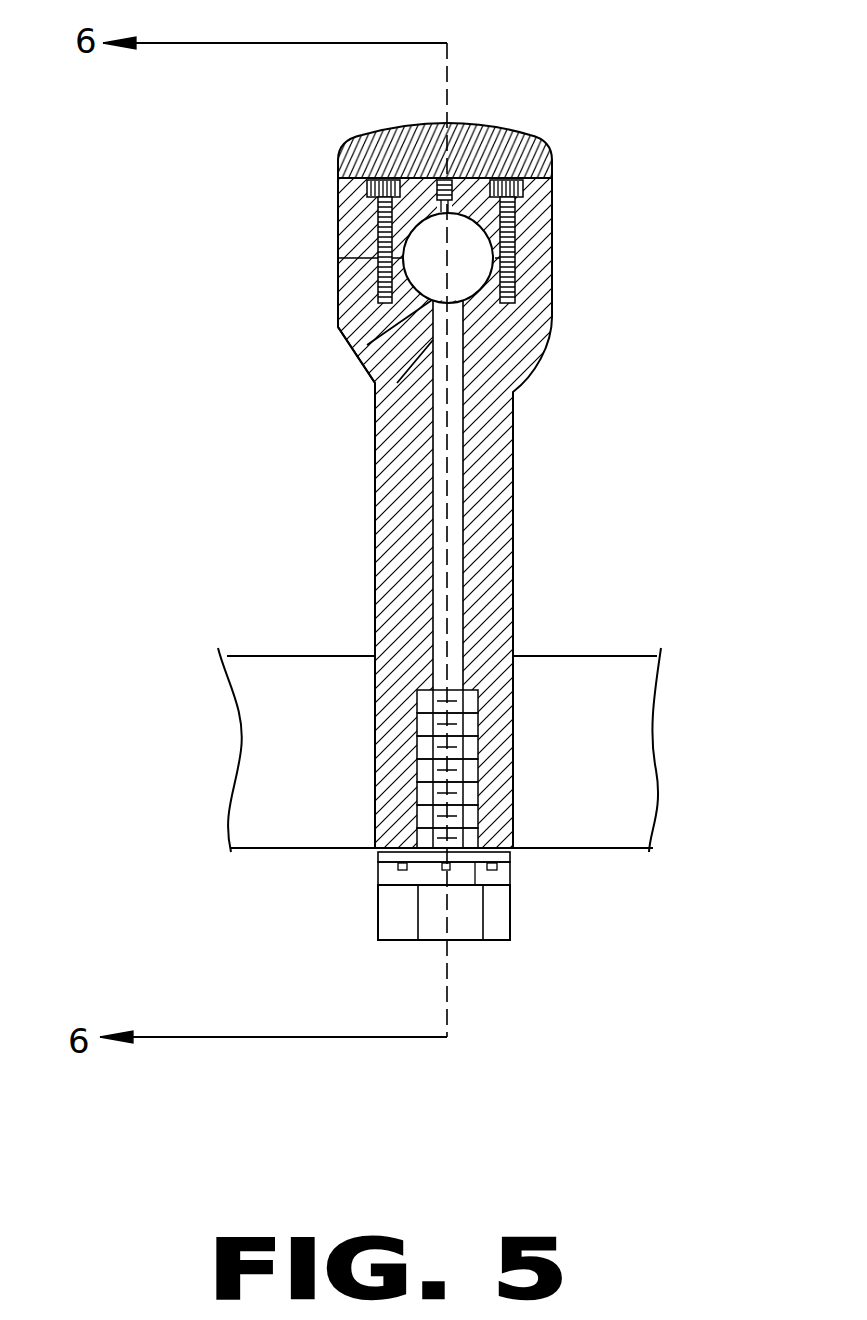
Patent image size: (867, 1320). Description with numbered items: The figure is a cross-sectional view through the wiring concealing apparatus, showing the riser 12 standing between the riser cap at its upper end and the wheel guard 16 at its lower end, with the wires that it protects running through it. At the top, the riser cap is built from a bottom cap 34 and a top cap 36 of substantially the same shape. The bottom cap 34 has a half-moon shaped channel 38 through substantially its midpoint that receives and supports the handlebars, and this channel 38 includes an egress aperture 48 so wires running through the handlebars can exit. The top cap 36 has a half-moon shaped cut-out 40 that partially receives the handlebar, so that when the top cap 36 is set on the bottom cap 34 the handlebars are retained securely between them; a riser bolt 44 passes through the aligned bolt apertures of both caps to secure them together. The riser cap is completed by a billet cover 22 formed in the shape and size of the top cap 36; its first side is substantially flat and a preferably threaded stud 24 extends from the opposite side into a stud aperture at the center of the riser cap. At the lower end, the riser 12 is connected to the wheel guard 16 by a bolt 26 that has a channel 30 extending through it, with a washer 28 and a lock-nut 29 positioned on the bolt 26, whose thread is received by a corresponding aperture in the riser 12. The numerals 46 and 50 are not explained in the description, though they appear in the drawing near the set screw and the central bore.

The riser 12 is at (513, 487).
The wheel guard 16 is at (307, 656).
The billet cover 22 is at (507, 130).
The stud 24 is at (372, 192).
The bolt 26 is at (505, 912).
The washer 28 is at (503, 858).
The lock-nut 29 is at (507, 875).
The channel 30 is at (473, 940).
The bottom cap 34 is at (550, 317).
The top cap 36 is at (553, 200).
The half-moon shaped channel 38 is at (355, 357).
The half-moon shaped cut-out 40 is at (493, 182).
The riser bolt 44 is at (515, 235).
The set screw 46 is at (463, 248).
The egress aperture 48 is at (375, 395).
The bore 50 is at (453, 377).